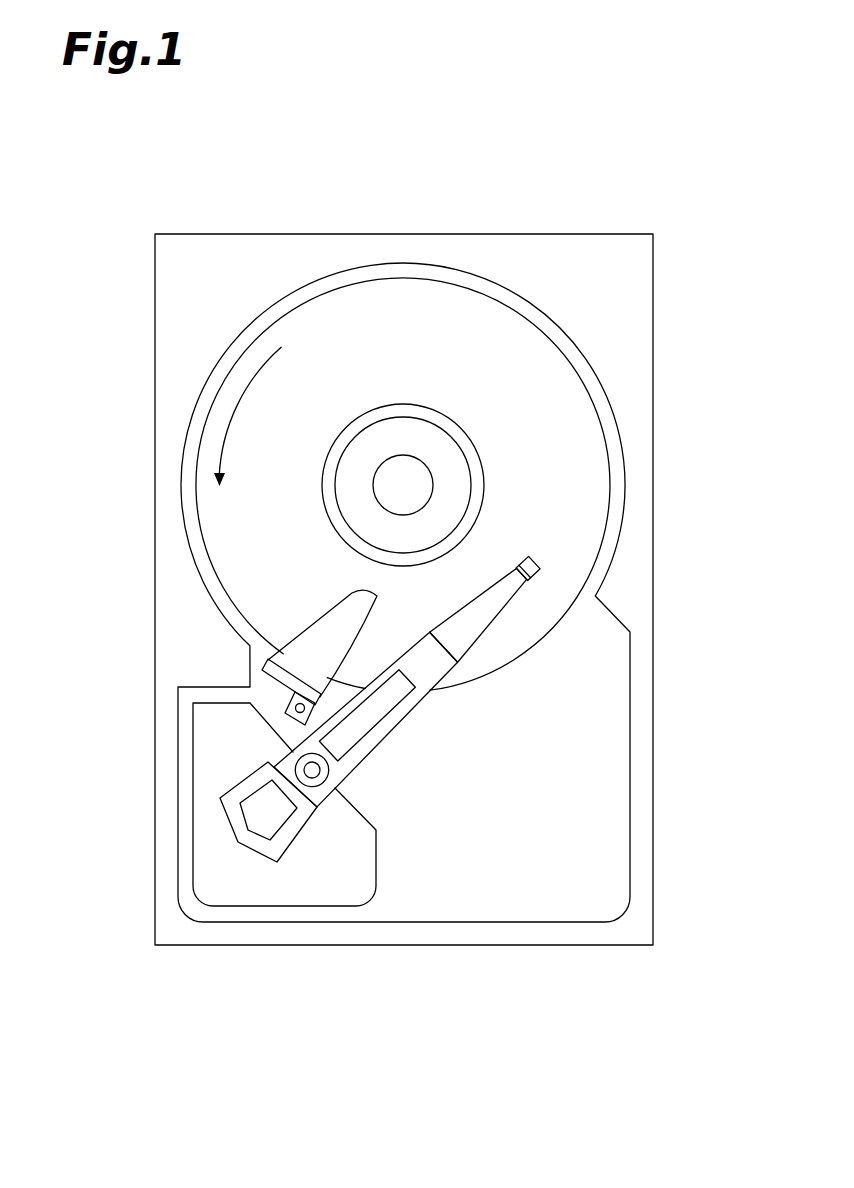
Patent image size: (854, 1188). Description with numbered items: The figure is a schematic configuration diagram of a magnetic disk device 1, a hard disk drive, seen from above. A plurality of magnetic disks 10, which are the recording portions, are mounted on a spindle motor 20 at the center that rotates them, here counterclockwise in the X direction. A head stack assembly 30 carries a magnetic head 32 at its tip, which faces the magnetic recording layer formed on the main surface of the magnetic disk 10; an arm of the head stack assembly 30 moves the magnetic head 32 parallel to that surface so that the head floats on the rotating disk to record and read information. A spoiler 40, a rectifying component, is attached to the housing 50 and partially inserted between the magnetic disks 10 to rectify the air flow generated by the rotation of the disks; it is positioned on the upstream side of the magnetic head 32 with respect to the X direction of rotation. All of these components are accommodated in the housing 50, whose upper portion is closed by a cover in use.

The magnetic disk device 1 is at (229, 176).
The magnetic disk 10 is at (458, 318).
The spindle motor 20 is at (413, 477).
The head stack assembly 30 is at (394, 744).
The magnetic head 32 is at (535, 560).
The spoiler 40 is at (304, 615).
The housing 50 is at (178, 342).
The X direction X is at (231, 422).